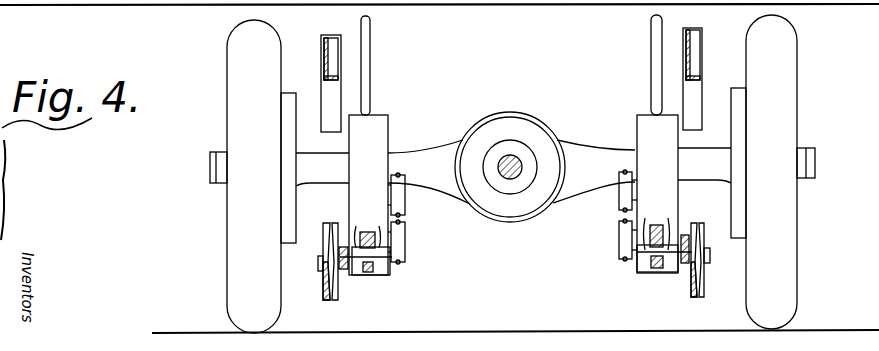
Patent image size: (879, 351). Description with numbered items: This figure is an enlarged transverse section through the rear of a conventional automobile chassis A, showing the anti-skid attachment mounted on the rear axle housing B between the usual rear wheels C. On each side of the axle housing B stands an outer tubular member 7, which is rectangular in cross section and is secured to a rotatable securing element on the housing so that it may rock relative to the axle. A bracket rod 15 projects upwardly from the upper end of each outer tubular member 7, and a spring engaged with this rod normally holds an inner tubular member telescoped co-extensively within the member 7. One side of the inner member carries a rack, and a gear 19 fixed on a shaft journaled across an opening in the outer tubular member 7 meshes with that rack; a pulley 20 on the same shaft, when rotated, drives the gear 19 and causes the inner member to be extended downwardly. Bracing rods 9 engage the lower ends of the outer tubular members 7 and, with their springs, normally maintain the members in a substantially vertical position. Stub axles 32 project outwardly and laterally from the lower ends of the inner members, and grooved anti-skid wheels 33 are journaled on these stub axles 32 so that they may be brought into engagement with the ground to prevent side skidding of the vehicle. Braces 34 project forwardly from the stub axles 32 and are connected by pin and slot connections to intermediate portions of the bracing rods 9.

The rear wheels C is at (247, 53).
The axle housing B is at (428, 163).
The automobile chassis A is at (691, 48).
The bracket rod 15 is at (650, 63).
The outer tubular member 7 is at (657, 194).
The gear 19 is at (654, 225).
The pulley 20 is at (618, 242).
The grooved anti-skid wheels 33 is at (312, 240).
The braces 34 is at (355, 237).
The stub axles 32 is at (318, 262).
The bracing rods 9 is at (369, 273).